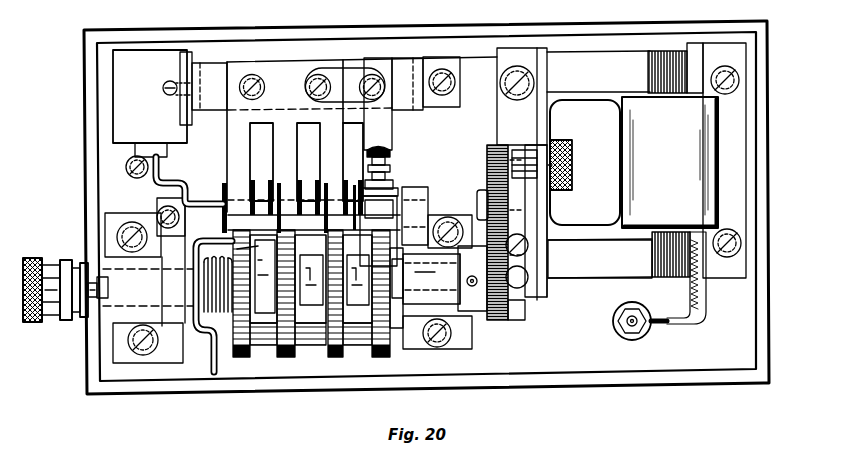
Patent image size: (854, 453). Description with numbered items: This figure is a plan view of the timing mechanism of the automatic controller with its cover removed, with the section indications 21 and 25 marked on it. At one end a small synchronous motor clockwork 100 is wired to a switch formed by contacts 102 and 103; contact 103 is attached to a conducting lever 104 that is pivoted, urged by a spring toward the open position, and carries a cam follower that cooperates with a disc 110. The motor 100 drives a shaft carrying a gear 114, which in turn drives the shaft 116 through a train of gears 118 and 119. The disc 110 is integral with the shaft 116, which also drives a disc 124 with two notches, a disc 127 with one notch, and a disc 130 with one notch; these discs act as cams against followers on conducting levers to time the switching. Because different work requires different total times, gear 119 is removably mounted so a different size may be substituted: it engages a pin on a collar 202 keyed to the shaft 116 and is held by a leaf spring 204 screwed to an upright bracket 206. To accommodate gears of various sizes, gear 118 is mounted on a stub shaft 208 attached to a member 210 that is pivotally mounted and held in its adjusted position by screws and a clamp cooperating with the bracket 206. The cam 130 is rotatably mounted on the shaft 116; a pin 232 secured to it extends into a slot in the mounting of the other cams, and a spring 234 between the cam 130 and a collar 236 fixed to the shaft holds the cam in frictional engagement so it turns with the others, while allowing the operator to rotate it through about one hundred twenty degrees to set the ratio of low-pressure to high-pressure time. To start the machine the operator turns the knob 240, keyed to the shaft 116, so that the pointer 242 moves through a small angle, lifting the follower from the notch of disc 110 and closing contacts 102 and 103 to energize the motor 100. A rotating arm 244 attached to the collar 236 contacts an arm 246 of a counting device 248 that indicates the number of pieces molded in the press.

The synchronous motor clockwork 100 is at (591, 108).
The switch contact 102 is at (386, 163).
The switch contact 103 is at (390, 170).
The conducting lever 104 is at (395, 188).
The disc 110 is at (388, 354).
The gear 114 is at (496, 145).
The shaft 116 is at (108, 308).
The gear 118 is at (512, 212).
The gear 119 is at (513, 312).
The disc 124 is at (335, 352).
The disc 127 is at (288, 352).
The disc 130 is at (240, 352).
The collar 202 is at (478, 318).
The leaf spring 204 is at (533, 258).
The upright bracket 206 is at (548, 287).
The stub shaft 208 is at (479, 204).
The member 210 is at (534, 134).
The section view arrow 21 is at (333, 410).
The section view arrows 25 is at (485, 167).
The pin 232 is at (229, 249).
The spring 234 is at (201, 270).
The collar 236 is at (173, 314).
The knob 240 is at (36, 257).
The pointer 242 is at (70, 258).
The rotating arm 244 is at (214, 374).
The arm 246 is at (207, 200).
The counting device 248 is at (118, 88).